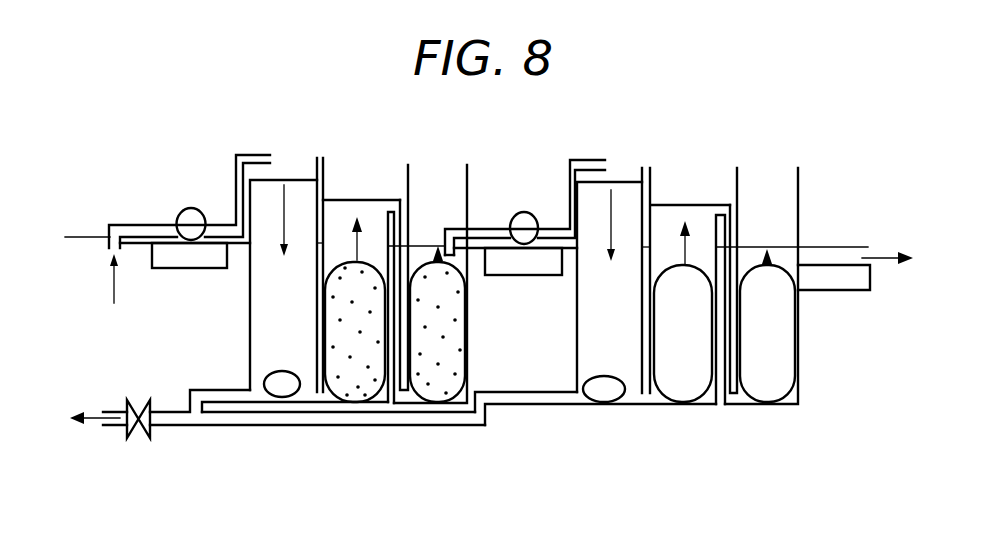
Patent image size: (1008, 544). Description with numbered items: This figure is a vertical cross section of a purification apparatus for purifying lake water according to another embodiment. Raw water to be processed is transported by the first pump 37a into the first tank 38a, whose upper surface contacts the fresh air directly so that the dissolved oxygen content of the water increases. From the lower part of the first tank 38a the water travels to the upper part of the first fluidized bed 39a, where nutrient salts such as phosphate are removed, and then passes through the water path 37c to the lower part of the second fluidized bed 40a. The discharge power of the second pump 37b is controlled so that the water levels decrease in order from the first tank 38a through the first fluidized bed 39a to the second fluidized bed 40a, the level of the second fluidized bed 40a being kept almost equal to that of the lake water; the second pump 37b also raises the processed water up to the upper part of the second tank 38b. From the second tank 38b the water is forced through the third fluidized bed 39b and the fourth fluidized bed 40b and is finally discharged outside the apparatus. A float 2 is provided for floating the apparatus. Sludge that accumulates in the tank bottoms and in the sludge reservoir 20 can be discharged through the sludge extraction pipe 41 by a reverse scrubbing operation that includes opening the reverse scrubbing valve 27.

The float 2 is at (175, 270).
The sludge reservoir 20 is at (282, 371).
The reverse scrubbing valve 27 is at (151, 400).
The first pump 37a is at (199, 208).
The second pump 37b is at (528, 213).
The water path 37c is at (386, 198).
The first tank 38a is at (299, 186).
The second tank 38b is at (624, 190).
The first fluidized bed 39a is at (347, 263).
The third fluidized bed 39b is at (675, 265).
The second fluidized bed 40a is at (430, 277).
The fourth fluidized bed 40b is at (757, 265).
The sludge extraction pipe 41 is at (535, 400).